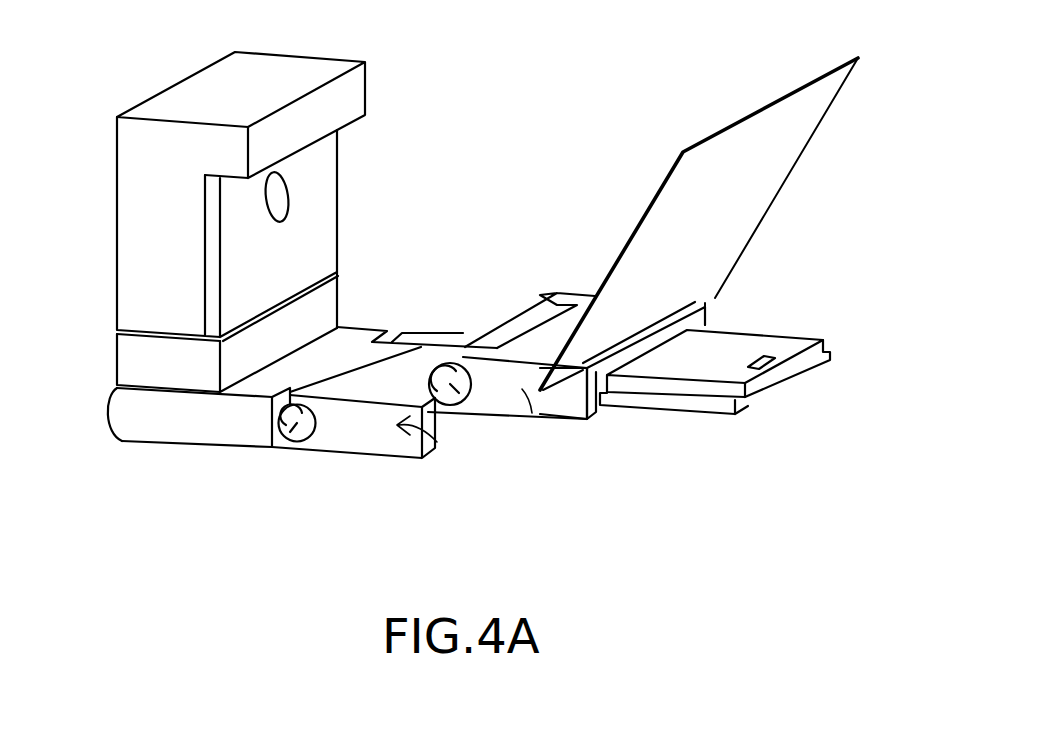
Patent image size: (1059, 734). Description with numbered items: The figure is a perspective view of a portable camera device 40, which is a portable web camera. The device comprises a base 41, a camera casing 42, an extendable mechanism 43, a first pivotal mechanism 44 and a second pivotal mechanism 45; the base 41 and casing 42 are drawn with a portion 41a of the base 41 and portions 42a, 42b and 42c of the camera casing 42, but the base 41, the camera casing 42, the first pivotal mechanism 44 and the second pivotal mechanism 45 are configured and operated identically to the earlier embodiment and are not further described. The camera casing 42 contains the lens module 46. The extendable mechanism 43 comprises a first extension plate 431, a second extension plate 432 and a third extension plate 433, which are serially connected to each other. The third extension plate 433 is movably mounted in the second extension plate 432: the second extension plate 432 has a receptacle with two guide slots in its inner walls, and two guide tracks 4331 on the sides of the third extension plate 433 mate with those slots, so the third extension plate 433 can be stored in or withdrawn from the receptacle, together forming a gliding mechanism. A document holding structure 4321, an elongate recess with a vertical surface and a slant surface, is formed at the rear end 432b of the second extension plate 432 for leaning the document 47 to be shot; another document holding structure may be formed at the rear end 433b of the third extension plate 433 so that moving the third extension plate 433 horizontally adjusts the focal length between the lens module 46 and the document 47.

The portable camera device 40 is at (718, 47).
The base 41 is at (200, 427).
The rounded end of base 41a is at (143, 423).
The camera casing 42 is at (147, 345).
The lower block of support column 42a is at (128, 367).
The upright body of support column 42b is at (317, 237).
The top portion of support column 42c is at (280, 185).
The extendable mechanism 43 is at (668, 415).
The first extension plate 431 is at (353, 440).
The second extension plate 432 is at (520, 395).
The document holding structure 4321 is at (537, 385).
The rear end of the second extension plate 432b is at (567, 400).
The third extension plate 433 is at (732, 350).
The guide tracks 4331 is at (697, 408).
The rear end of the third extension plate 433b is at (783, 378).
The first pivotal mechanism 44 is at (297, 432).
The second pivotal mechanism 45 is at (467, 362).
The lens module 46 is at (277, 173).
The document 47 is at (772, 158).